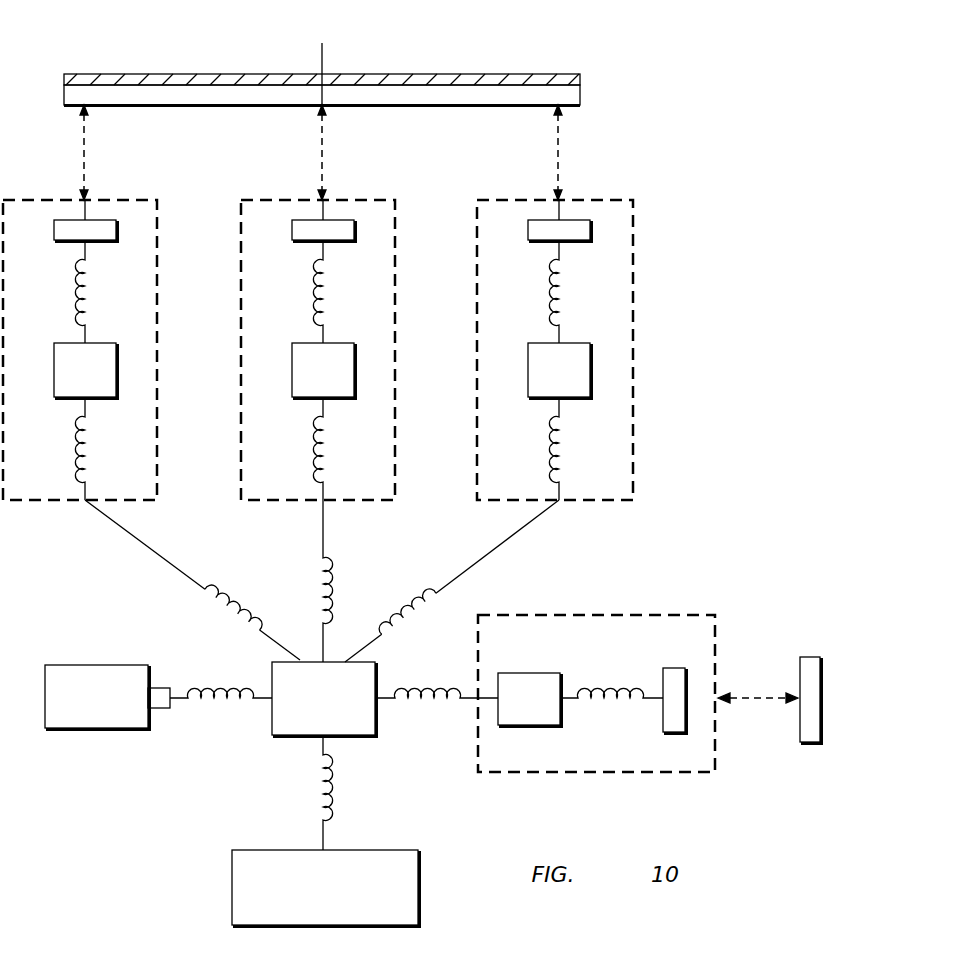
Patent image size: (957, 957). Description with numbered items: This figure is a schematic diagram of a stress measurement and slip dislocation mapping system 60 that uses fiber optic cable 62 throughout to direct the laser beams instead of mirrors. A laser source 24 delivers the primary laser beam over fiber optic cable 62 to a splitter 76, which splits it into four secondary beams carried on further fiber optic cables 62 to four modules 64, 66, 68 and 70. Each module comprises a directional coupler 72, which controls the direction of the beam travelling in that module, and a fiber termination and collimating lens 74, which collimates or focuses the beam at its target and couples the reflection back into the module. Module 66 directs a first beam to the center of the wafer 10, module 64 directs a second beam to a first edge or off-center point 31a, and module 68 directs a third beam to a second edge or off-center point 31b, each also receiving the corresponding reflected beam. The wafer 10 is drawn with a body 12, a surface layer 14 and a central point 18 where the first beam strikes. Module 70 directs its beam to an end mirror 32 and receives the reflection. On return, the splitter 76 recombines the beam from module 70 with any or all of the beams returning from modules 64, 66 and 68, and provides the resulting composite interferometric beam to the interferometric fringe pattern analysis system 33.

The wafer 10 is at (345, 90).
The specimen body 12 is at (193, 106).
The specimen surface layer 14 is at (90, 73).
The central beam spot 18 is at (328, 107).
The laser source 24 is at (100, 730).
The first edge point 31a is at (80, 107).
The second edge point 31b is at (566, 107).
The end mirror 32 is at (810, 744).
The interferometric fringe pattern analysis system 33 is at (420, 890).
The stress measurement and slip dislocation mapping system 60 is at (179, 28).
The fiber optic cable 62 is at (87, 332).
The module 64 is at (42, 502).
The module 66 is at (280, 502).
The director module 68 is at (612, 502).
The module 70 is at (672, 614).
The directional coupler 72 is at (97, 399).
The fiber termination and collimating lens 74 is at (64, 242).
The splitter 76 is at (296, 738).